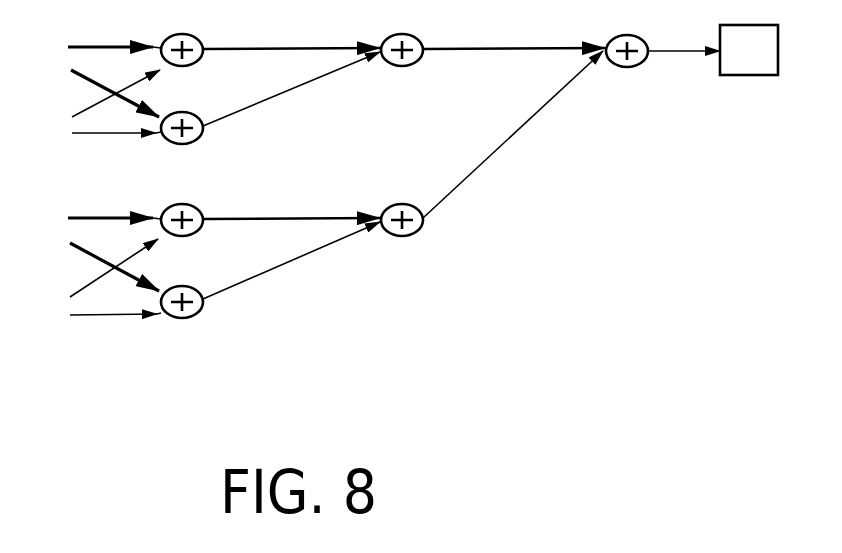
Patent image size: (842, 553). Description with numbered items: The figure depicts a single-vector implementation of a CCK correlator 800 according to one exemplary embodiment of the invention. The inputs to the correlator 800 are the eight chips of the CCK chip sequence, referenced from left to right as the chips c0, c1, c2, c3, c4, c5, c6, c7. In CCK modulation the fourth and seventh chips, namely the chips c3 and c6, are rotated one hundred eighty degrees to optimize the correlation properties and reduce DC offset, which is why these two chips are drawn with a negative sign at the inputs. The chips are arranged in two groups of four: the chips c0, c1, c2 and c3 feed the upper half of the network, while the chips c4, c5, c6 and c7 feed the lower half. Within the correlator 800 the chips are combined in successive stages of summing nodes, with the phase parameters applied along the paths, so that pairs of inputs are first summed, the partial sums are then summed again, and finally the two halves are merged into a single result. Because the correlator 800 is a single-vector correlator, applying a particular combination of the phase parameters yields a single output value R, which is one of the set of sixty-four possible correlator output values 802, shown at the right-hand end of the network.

The correlator 800 is at (334, 202).
The correlator output value 802 is at (735, 80).
The chip c0 is at (97, 46).
The chip c1 is at (97, 91).
The chip c2 is at (99, 98).
The chip c3 is at (93, 134).
The chip c4 is at (97, 216).
The chip c5 is at (98, 264).
The chip c6 is at (89, 268).
The chip c7 is at (99, 316).